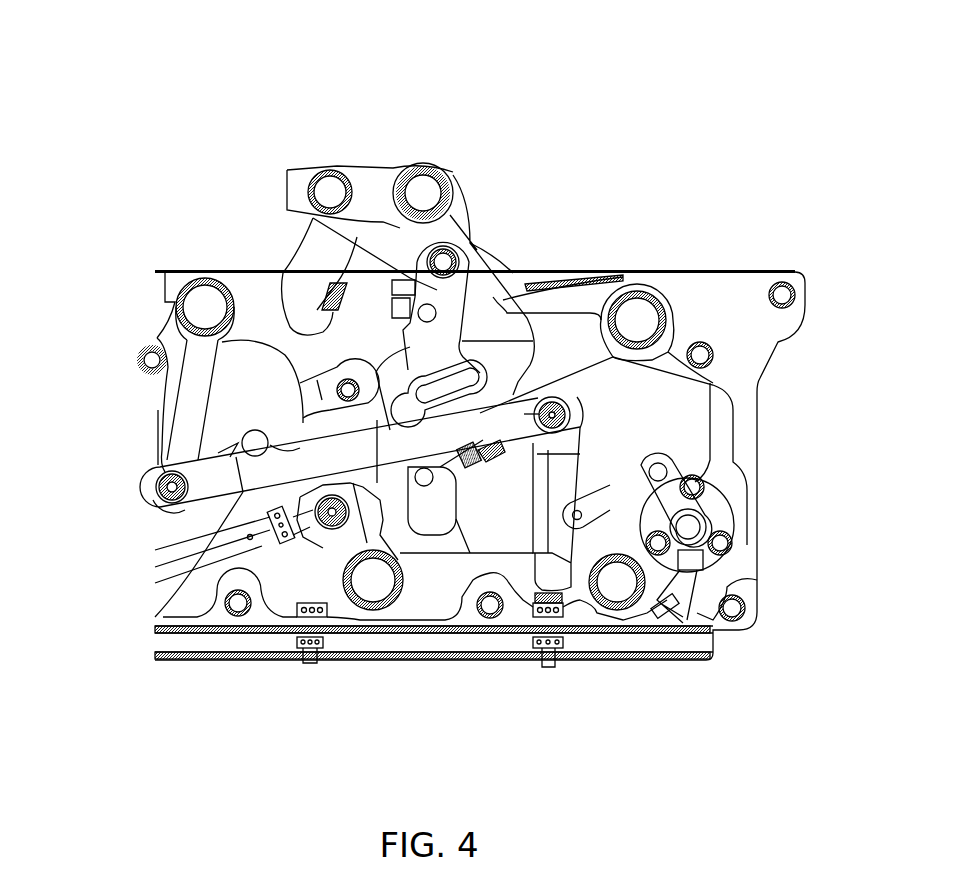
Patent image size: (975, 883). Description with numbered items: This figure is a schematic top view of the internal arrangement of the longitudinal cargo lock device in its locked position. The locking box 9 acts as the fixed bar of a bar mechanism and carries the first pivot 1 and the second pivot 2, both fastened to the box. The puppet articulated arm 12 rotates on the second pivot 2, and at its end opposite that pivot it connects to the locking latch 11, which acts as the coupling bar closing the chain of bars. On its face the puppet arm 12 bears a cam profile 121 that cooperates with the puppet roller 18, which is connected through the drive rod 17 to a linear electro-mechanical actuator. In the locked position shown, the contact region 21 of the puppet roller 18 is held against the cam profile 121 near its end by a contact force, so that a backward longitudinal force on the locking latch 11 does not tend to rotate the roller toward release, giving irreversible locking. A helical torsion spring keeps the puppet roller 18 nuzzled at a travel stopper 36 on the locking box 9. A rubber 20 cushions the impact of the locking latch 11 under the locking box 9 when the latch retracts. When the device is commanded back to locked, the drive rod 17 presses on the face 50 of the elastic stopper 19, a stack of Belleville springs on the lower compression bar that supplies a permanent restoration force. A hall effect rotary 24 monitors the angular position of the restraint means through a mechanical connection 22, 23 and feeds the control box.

The first pivot 1 is at (200, 296).
The second pivot 2 is at (639, 312).
The locking box 9 is at (408, 668).
The locking latch 11 is at (295, 160).
The puppet articulated arm 12 is at (493, 253).
The drive rod 17 is at (250, 498).
The puppet roller 18 is at (597, 458).
The elastic stopper 19 is at (473, 478).
The rubber 20 is at (322, 322).
The contact region 21 is at (593, 407).
The mechanical connection 22 is at (712, 497).
The mechanical connection 23 is at (660, 540).
The hall effect rotary 24 is at (687, 572).
The travel stopper 36 is at (572, 600).
The face of the elastic stopper 50 is at (495, 463).
The cam profile 121 is at (588, 380).